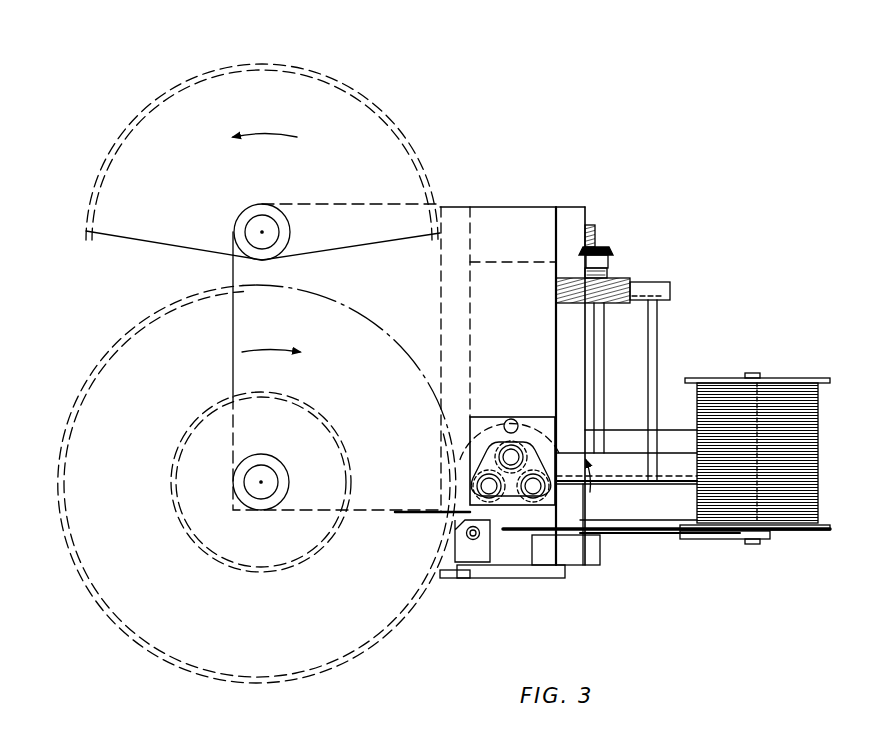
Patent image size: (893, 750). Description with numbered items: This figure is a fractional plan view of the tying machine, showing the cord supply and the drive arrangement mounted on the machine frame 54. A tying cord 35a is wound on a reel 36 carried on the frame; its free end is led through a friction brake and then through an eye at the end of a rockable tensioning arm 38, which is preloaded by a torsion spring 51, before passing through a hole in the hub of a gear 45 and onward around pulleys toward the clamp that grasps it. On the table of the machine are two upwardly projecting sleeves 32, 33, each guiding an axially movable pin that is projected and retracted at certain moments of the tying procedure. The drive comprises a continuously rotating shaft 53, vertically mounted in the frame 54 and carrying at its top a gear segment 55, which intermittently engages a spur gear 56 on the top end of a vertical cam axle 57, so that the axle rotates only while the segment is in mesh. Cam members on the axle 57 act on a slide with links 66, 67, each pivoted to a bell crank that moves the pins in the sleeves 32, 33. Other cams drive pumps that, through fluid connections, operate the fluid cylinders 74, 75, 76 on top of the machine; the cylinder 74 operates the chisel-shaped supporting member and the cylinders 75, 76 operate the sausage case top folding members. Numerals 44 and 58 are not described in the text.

The sleeve 32 is at (463, 533).
The sleeve 33 is at (548, 541).
The tying cord 35a is at (622, 484).
The reel 36 is at (718, 378).
The tensioning arm 38 is at (648, 486).
The base plate 44 is at (673, 486).
The gear 45 is at (566, 463).
The torsion spring 51 is at (622, 281).
The shaft 53 is at (266, 236).
The machine frame 54 is at (498, 207).
The gear segment 55 is at (408, 137).
The spur gear 56 is at (346, 456).
The cam axle 57 is at (264, 481).
The lower reel 58 is at (303, 672).
The link 66 is at (448, 580).
The link 67 is at (512, 580).
The fluid cylinder 74 is at (530, 500).
The fluid cylinder 75 is at (492, 500).
The fluid cylinder 76 is at (504, 450).